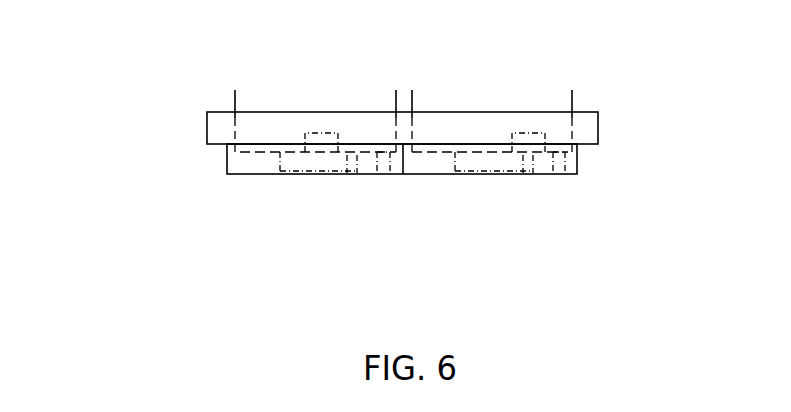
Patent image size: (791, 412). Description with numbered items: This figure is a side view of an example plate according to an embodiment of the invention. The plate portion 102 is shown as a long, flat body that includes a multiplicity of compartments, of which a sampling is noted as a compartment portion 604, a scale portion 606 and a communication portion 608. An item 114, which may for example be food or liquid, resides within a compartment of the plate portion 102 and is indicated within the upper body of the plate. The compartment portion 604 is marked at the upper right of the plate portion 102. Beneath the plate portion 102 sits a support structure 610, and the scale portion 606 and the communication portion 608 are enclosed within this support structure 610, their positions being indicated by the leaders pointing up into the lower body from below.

The plate portion 102 is at (194, 123).
The item 114 is at (524, 118).
The compartment portion 604 is at (586, 104).
The scale portion 606 is at (482, 189).
The communication portion 608 is at (558, 189).
The support structure 610 is at (591, 160).